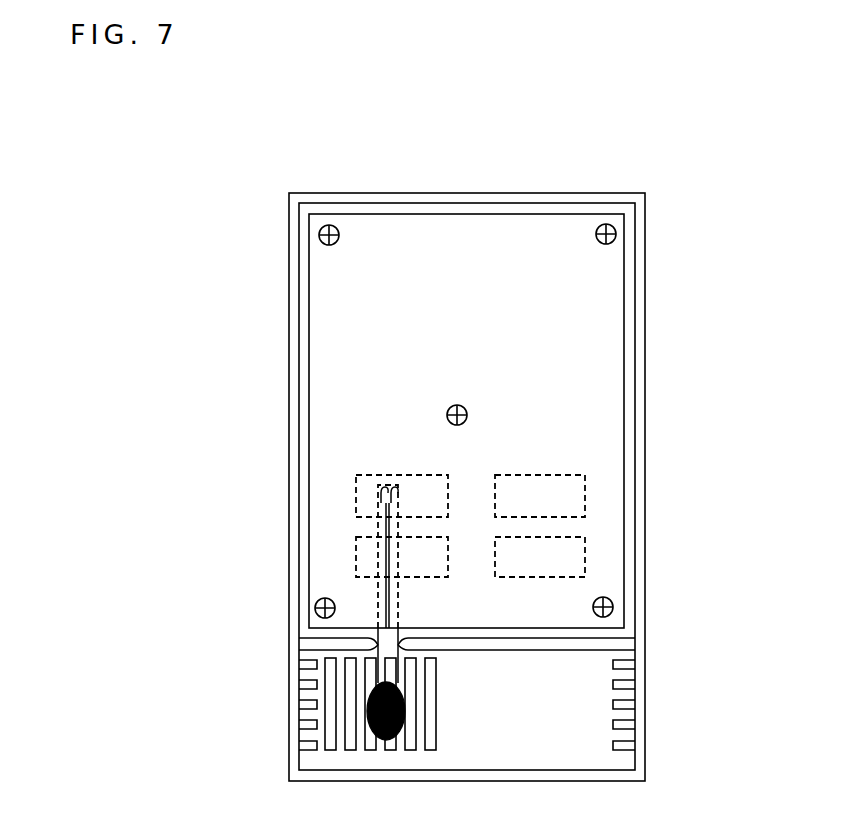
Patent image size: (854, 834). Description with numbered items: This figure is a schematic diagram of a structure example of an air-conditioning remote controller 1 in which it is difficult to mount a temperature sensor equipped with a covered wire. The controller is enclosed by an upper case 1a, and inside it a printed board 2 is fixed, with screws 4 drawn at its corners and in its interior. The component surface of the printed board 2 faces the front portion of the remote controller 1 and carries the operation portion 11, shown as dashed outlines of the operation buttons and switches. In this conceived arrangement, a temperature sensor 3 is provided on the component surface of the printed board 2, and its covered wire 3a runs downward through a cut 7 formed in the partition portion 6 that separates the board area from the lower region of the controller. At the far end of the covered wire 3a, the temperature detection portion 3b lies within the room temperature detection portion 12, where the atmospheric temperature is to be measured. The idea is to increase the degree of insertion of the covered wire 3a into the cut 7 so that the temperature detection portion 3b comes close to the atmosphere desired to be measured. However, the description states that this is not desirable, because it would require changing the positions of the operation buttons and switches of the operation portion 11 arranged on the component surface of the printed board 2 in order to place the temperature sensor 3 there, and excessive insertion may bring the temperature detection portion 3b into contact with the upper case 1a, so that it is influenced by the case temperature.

The air-conditioning remote controller 1 is at (570, 193).
The upper case 1a is at (648, 255).
The printed board 2 is at (458, 367).
The temperature sensor 3 is at (384, 574).
The covered wire 3a is at (400, 517).
The temperature detection portion 3b is at (405, 694).
The screw 4 is at (339, 232).
The partition portion 6 is at (492, 638).
The cut 7 is at (399, 634).
The operation portion 11 is at (498, 475).
The room temperature detection portion 12 is at (575, 718).